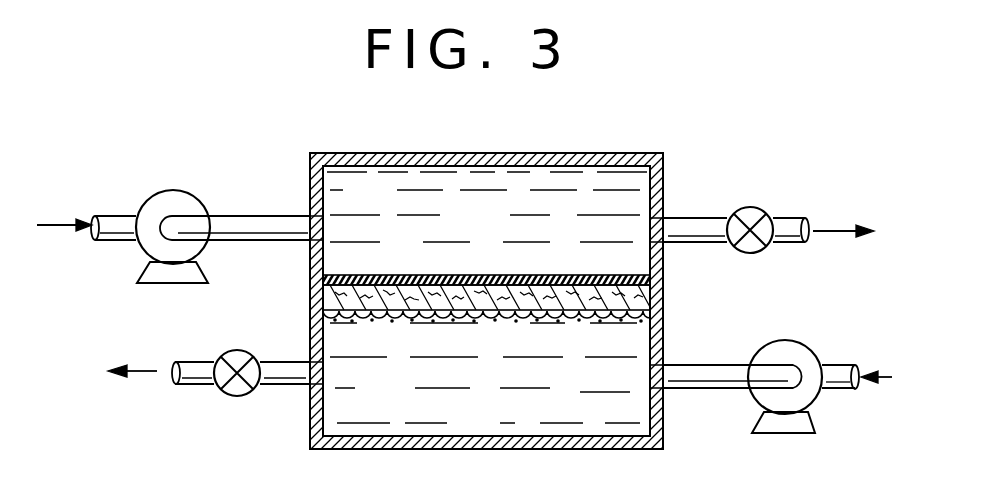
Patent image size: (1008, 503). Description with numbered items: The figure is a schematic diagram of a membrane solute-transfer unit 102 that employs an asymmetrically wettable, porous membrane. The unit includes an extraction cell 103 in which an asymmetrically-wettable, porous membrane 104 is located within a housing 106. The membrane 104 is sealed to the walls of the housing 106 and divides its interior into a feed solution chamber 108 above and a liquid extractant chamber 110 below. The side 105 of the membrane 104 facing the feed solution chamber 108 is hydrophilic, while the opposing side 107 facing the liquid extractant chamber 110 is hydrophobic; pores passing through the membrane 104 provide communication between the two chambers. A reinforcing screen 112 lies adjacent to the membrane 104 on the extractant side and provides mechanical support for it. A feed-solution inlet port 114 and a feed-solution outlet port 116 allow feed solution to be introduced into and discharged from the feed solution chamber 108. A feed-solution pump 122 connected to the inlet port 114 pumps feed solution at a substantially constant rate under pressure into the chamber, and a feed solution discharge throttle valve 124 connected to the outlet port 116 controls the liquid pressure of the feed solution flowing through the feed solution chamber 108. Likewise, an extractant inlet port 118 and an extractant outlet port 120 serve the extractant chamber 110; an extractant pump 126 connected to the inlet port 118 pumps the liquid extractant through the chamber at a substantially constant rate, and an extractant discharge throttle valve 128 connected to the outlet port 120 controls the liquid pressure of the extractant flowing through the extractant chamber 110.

The membrane solute-transfer unit 102 is at (733, 154).
The extraction cell 103 is at (678, 327).
The asymmetrically-wettable, porous membrane 104 is at (488, 278).
The side of the membrane 105 is at (425, 275).
The housing 106 is at (623, 152).
The opposing side of the membrane 107 is at (396, 318).
The feed solution chamber 108 is at (500, 231).
The liquid extractant chamber 110 is at (508, 426).
The reinforcing screen 112 is at (579, 318).
The feed-solution inlet port 114 is at (324, 228).
The feed-solution outlet port 116 is at (650, 228).
The extractant inlet port 118 is at (650, 376).
The extractant outlet port 120 is at (323, 377).
The feed-solution pump 122 is at (197, 198).
The feed solution discharge throttle valve 124 is at (757, 207).
The extractant pump 126 is at (790, 342).
The extractant discharge throttle valve 128 is at (220, 352).